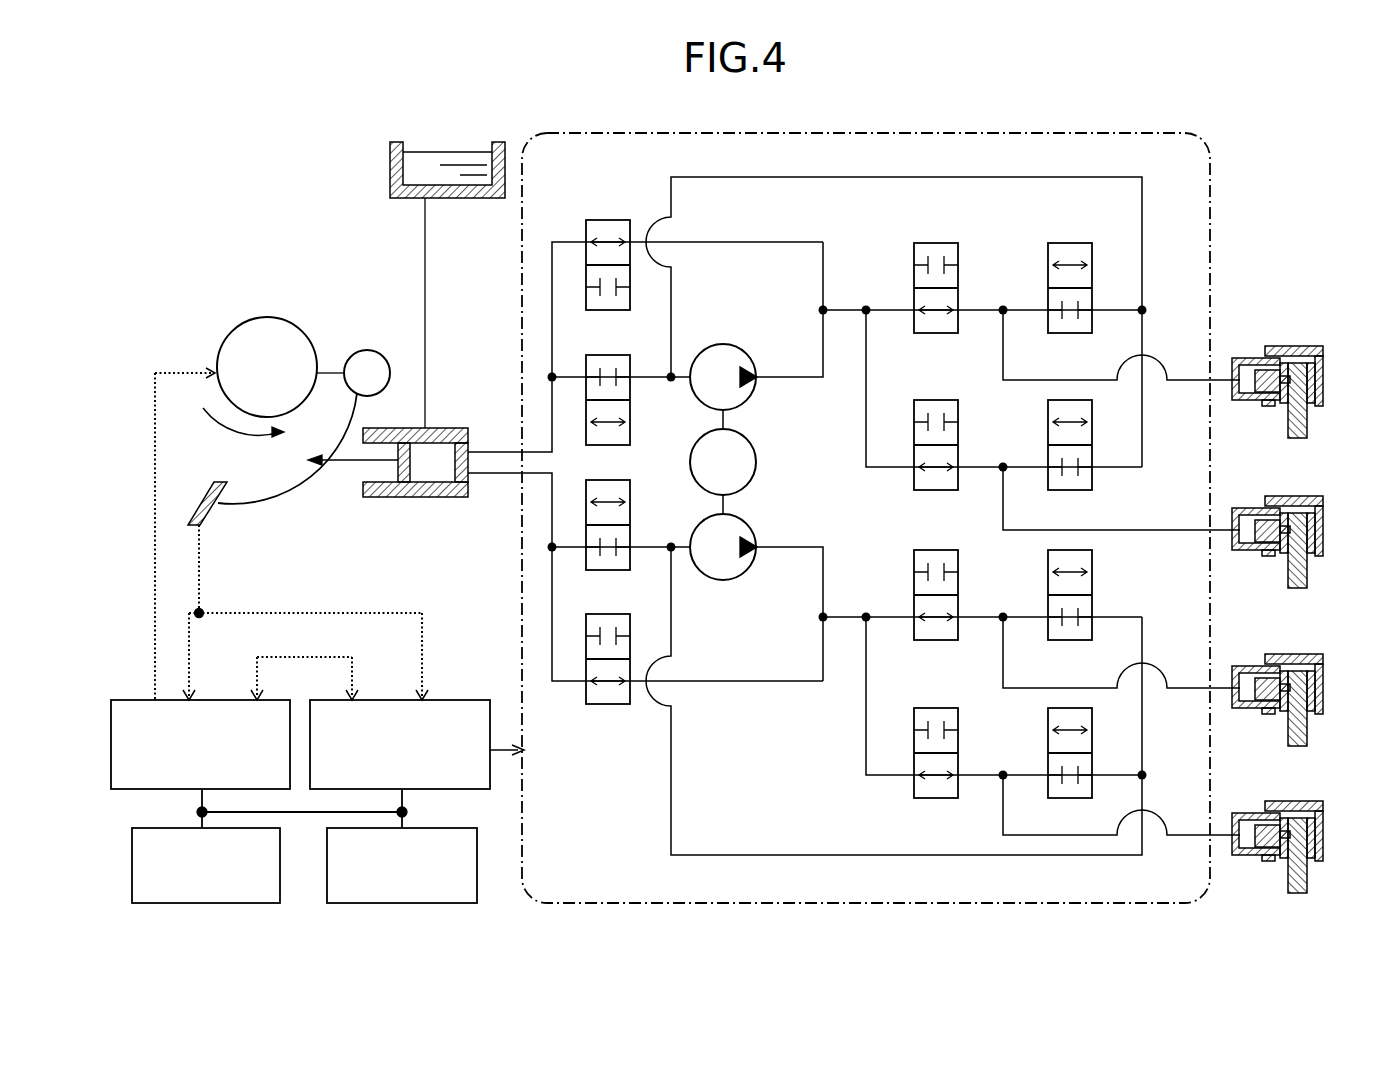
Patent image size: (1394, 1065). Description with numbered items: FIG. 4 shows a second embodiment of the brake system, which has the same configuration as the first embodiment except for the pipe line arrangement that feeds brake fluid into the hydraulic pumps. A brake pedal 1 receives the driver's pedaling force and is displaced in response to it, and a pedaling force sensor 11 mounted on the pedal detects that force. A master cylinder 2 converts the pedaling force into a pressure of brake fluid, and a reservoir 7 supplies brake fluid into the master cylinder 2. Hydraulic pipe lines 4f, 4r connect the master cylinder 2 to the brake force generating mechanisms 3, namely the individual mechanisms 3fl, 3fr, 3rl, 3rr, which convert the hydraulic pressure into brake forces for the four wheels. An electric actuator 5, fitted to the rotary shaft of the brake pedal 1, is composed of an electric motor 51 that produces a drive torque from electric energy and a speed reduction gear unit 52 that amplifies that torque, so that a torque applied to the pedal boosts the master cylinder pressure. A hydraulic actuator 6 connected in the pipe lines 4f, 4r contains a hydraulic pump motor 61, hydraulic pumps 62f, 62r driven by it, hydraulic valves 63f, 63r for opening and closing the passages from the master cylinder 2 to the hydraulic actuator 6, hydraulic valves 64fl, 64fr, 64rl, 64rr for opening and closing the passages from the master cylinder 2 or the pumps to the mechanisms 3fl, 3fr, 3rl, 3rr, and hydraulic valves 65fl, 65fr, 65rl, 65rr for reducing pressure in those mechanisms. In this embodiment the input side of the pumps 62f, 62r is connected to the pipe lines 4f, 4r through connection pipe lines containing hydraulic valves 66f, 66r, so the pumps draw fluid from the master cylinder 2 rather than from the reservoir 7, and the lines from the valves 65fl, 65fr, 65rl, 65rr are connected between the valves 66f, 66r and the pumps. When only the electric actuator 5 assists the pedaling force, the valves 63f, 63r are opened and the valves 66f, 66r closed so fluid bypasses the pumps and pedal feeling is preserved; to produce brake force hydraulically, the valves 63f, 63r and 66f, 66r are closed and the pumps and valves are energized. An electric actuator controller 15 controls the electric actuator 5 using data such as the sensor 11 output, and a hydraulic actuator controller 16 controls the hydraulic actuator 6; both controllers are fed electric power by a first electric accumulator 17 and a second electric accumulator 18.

The brake pedal 1 is at (245, 498).
The master cylinder 2 is at (447, 497).
The brake force generating mechanisms 3 is at (1278, 270).
The brake force generating mechanism 3fl is at (1310, 347).
The brake force generating mechanism 3fr is at (1310, 497).
The brake force generating mechanism 3rl is at (1310, 653).
The brake force generating mechanism 3rr is at (1310, 800).
The hydraulic pipe line 4f is at (570, 242).
The hydraulic pipe line 4r is at (568, 681).
The electric actuator 5 is at (247, 269).
The electric motor 51 is at (220, 332).
The speed reduction gear unit 52 is at (362, 352).
The hydraulic actuator 6 is at (522, 548).
The hydraulic pump motor 61 is at (752, 472).
The hydraulic pump 62f is at (752, 355).
The hydraulic pump 62r is at (745, 578).
The hydraulic valve 63f is at (602, 220).
The hydraulic valve 63r is at (610, 704).
The hydraulic valve 64fl is at (914, 243).
The hydraulic valve 64fr is at (914, 402).
The hydraulic valve 64rl is at (914, 550).
The hydraulic valve 64rr is at (914, 709).
The hydraulic valve 65fl is at (1048, 243).
The hydraulic valve 65fr is at (1048, 412).
The hydraulic valve 65rl is at (1048, 558).
The hydraulic valve 65rr is at (1048, 718).
The hydraulic valve 66f is at (630, 432).
The hydraulic valve 66r is at (630, 503).
The reservoir 7 is at (390, 178).
The pedaling force sensor 11 is at (208, 523).
The electric actuator controller 15 is at (142, 700).
The hydraulic actuator controller 16 is at (448, 700).
The first electric accumulator 17 is at (132, 862).
The second electric accumulator 18 is at (477, 847).